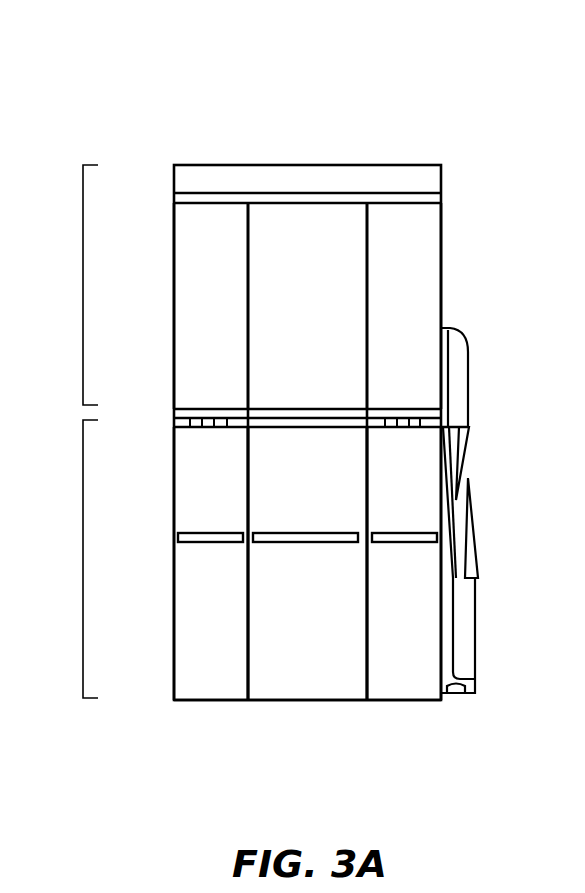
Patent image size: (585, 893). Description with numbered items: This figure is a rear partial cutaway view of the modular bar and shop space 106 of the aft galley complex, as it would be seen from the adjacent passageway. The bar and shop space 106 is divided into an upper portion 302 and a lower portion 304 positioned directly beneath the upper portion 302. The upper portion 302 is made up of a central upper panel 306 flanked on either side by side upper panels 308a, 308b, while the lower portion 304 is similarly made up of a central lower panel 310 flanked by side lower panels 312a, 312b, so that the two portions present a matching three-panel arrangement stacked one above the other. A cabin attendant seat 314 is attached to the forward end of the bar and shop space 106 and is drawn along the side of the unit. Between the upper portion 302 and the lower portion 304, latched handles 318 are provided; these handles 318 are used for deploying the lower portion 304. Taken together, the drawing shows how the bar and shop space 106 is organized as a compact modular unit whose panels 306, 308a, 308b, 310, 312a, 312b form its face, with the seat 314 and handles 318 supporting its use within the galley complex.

The bar and shop space 106 is at (122, 101).
The upper portion 302 is at (83, 283).
The lower portion 304 is at (83, 558).
The central upper panel 306 is at (312, 268).
The side upper panel 308a is at (215, 262).
The side upper panel 308b is at (407, 248).
The central lower panel 310 is at (303, 655).
The side lower panel 312a is at (208, 655).
The side lower panel 312b is at (400, 655).
The cabin attendant seat 314 is at (457, 397).
The latched handles 318 is at (205, 418).